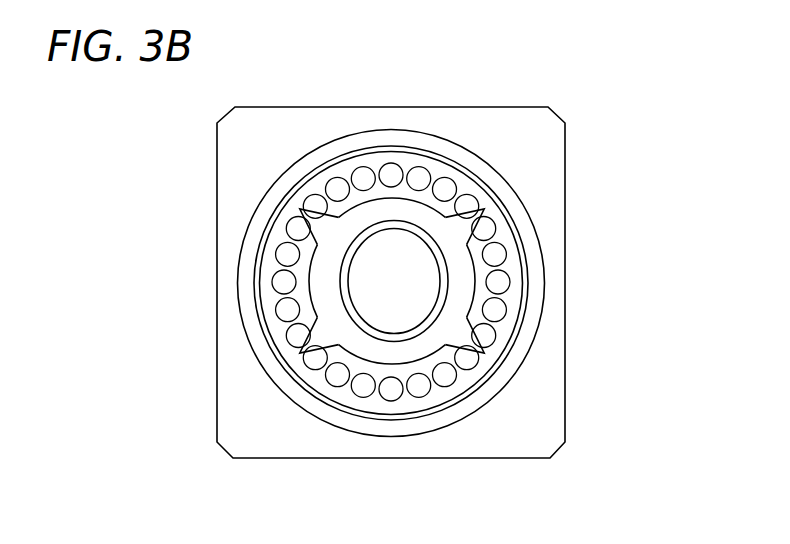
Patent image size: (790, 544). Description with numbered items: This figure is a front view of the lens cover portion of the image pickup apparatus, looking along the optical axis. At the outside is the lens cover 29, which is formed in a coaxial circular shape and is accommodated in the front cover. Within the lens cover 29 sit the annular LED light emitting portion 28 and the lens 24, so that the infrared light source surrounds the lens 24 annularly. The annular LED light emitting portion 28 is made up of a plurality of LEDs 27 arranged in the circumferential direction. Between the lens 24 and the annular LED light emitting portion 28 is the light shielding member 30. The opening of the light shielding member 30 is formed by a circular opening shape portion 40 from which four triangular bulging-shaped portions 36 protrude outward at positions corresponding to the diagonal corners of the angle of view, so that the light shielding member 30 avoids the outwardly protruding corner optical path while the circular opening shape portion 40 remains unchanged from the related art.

The lens 24 is at (415, 285).
The LEDs 27 is at (335, 378).
The annular LED light emitting portion 28 is at (340, 397).
The lens cover 29 is at (500, 177).
The light shielding member 30 is at (422, 368).
The triangular bulging-shaped portion 36 is at (305, 208).
The circular opening shape portion 40 is at (400, 195).